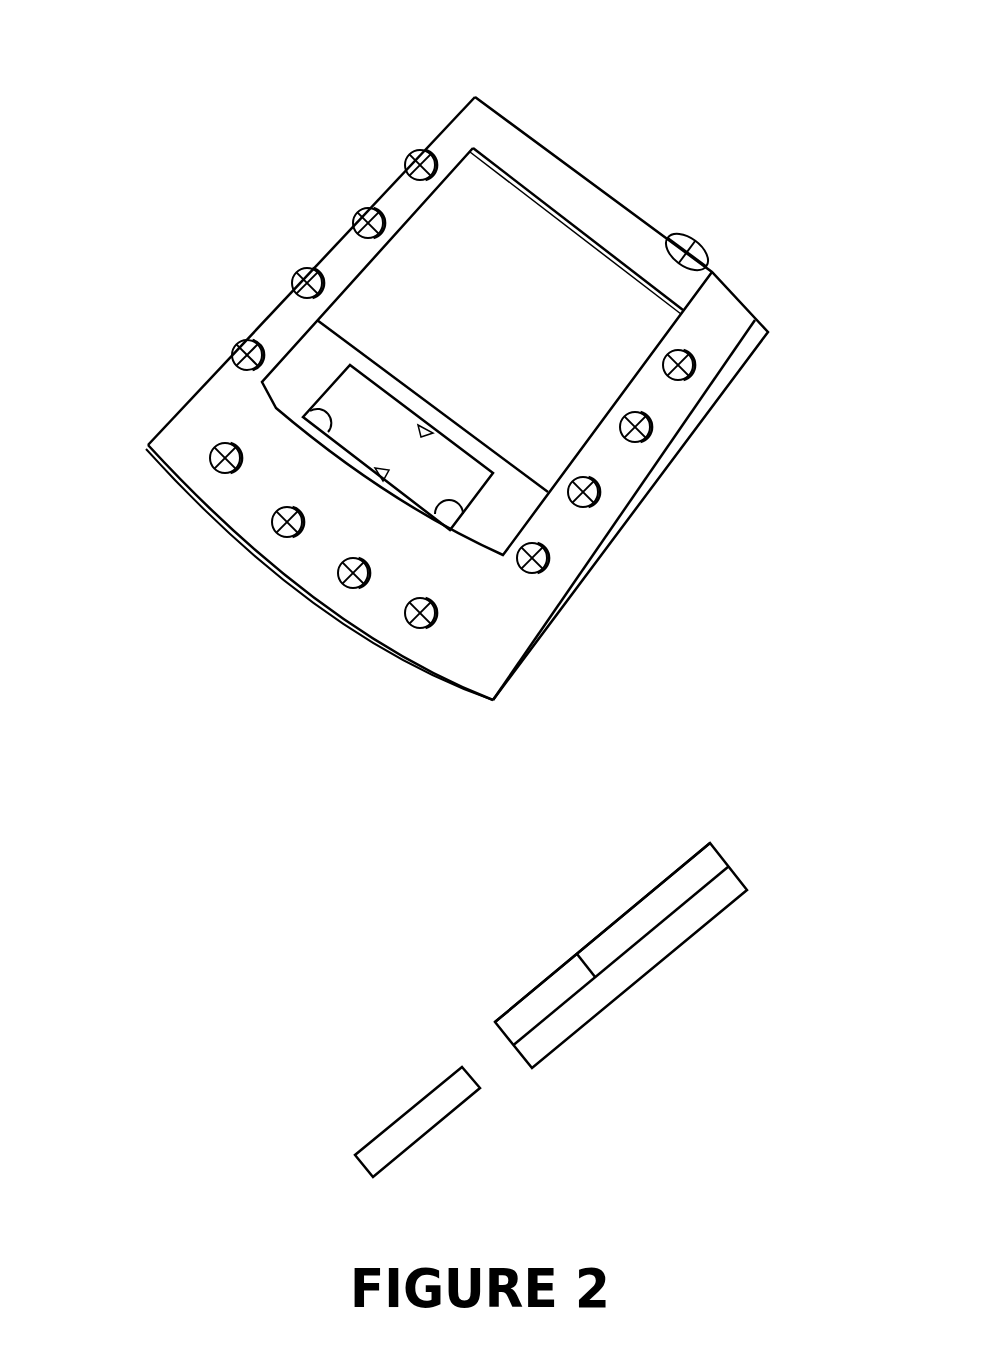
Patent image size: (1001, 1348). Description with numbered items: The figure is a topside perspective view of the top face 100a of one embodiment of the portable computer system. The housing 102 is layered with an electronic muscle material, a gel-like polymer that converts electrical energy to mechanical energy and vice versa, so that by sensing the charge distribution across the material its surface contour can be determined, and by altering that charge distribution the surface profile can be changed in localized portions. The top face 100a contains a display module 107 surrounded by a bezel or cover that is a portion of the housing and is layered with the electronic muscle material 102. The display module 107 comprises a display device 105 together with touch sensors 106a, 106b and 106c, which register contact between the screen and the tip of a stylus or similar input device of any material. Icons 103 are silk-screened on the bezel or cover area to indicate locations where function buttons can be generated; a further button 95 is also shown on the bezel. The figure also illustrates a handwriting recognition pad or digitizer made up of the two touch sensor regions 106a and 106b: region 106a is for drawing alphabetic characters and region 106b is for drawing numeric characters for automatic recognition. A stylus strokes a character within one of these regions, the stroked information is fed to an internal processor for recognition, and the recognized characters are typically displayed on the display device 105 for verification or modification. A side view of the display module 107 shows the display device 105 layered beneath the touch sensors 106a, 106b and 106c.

The top face 100a is at (198, 25).
The housing 102 is at (337, 248).
The icons 103 is at (552, 545).
The power button 95 is at (693, 239).
The display module 107 is at (537, 250).
The display device 105 is at (508, 339).
The touch sensor region 106a is at (393, 427).
The touch sensor region 106b is at (462, 474).
The touch sensor 106c is at (517, 314).